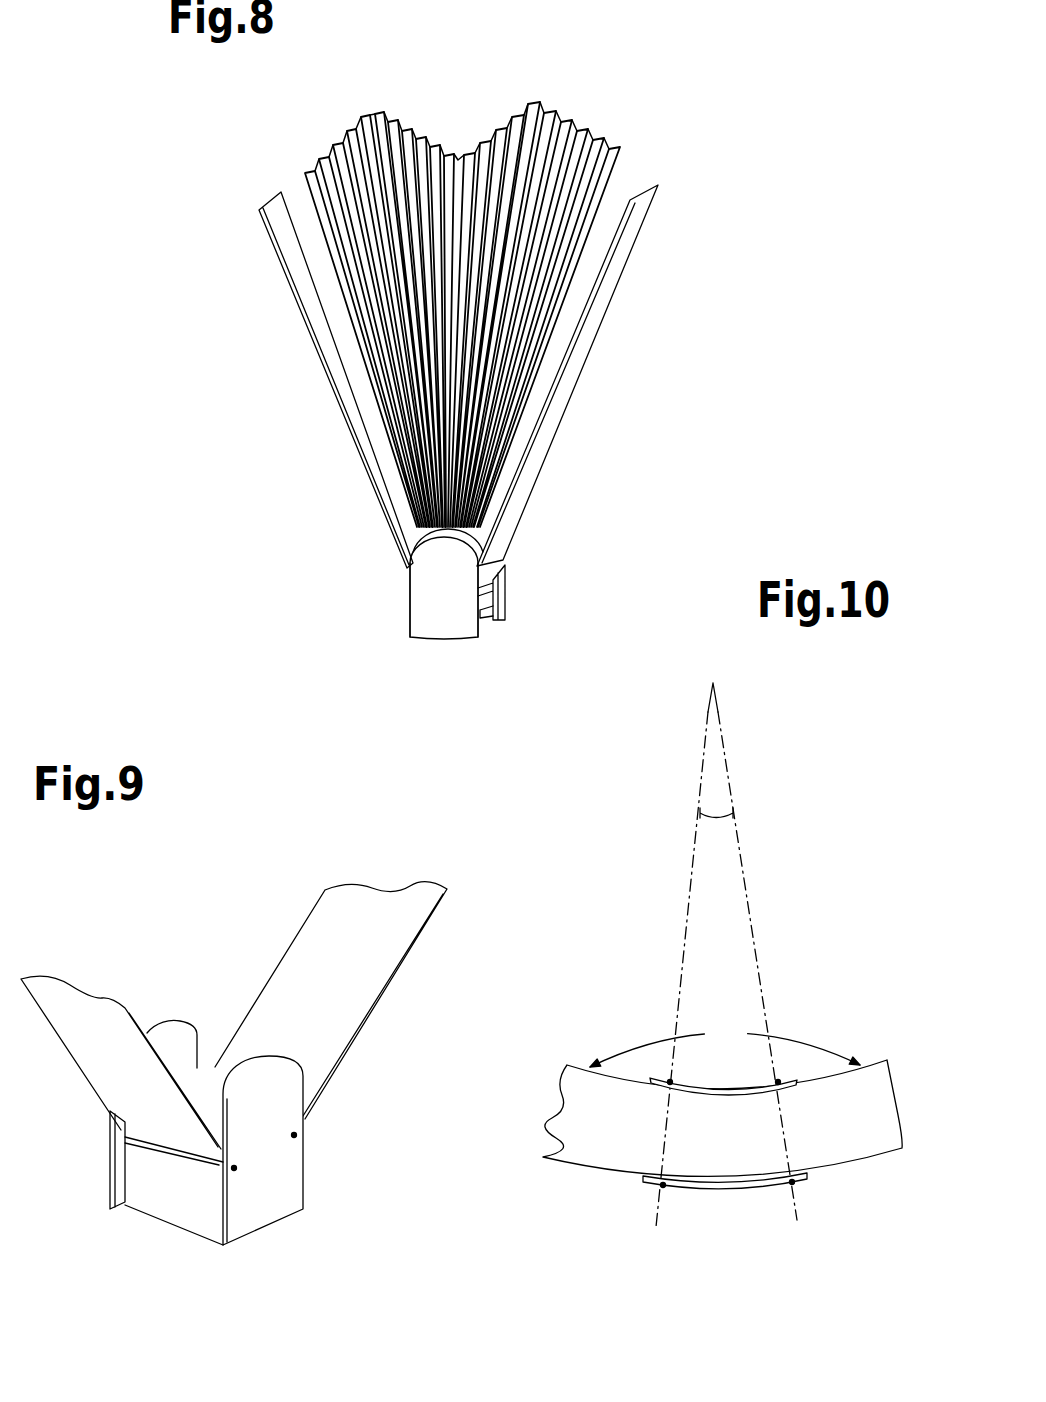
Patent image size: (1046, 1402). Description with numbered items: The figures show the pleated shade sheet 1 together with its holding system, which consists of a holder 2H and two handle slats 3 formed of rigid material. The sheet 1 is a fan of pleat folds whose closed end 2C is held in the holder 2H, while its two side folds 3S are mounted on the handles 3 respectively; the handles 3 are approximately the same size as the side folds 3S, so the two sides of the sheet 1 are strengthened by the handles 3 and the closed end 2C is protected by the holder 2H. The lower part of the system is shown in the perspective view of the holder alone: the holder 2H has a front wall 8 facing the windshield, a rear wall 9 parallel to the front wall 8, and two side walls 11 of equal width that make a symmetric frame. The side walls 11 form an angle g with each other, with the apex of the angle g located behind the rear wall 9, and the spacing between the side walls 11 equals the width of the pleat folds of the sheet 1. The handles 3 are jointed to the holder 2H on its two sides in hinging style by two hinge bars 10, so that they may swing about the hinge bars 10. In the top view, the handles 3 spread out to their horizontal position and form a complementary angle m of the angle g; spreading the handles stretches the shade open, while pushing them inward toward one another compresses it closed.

In FIG. 8, the sheet 1 is at (358, 137).
In FIG. 8, the handle slats 3 is at (315, 315).
In FIG. 9, the handle slats 3 is at (369, 942).
In FIG. 10, the handle slats 3 is at (885, 1120).
In FIG. 8, the side folds 3S is at (602, 203).
In FIG. 8, the closed end 2C is at (437, 537).
In FIG. 8, the front wall 8 is at (447, 622).
In FIG. 9, the front wall 8 is at (282, 1170).
In FIG. 10, the front wall 8 is at (763, 1190).
In FIG. 8, the rear wall 9 is at (507, 580).
In FIG. 9, the rear wall 9 is at (174, 1045).
In FIG. 10, the rear wall 9 is at (703, 1083).
In FIG. 8, the hinge bars 10 is at (465, 597).
In FIG. 8, the side walls 11 is at (485, 615).
In FIG. 9, the holder 2H is at (142, 1238).
In FIG. 10, the angle g is at (710, 823).
In FIG. 10, the complementary angle m is at (725, 1037).